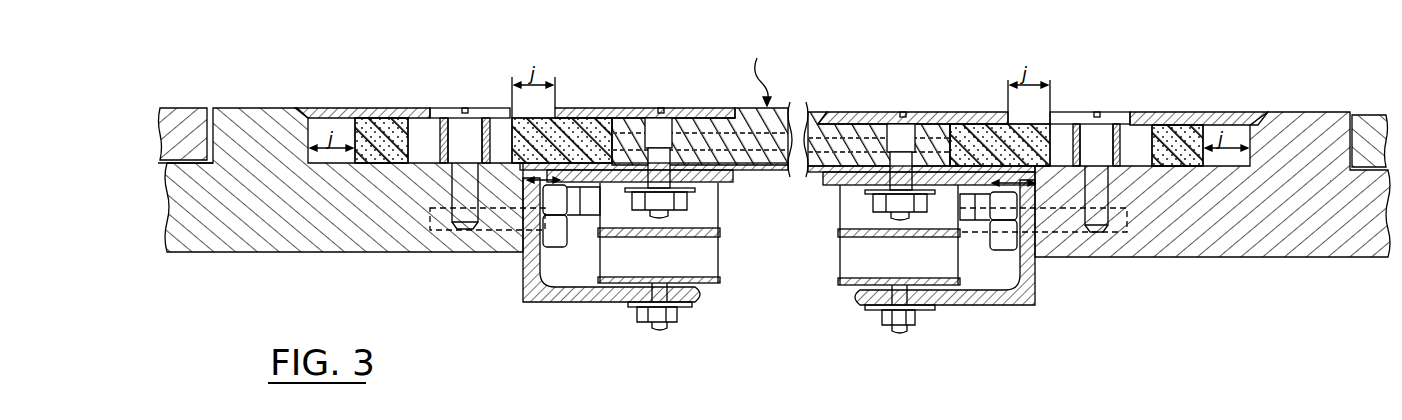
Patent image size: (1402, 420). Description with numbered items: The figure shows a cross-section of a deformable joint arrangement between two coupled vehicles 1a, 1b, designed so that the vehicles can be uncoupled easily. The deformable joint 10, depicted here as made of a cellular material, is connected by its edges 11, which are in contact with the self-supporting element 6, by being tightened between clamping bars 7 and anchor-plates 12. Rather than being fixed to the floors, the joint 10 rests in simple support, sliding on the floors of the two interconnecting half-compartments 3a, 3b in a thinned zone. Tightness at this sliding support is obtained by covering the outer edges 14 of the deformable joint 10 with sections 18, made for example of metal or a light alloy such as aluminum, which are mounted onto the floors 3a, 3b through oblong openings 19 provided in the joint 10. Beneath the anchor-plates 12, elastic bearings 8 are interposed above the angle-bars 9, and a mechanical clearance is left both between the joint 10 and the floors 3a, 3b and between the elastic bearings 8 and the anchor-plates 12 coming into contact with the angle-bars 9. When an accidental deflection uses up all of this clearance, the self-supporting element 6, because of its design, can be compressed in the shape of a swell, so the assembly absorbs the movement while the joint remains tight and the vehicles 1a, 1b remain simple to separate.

The vehicle 1a is at (192, 112).
The vehicle 1b is at (1365, 116).
The floor of interconnecting half-compartment 3a is at (257, 252).
The floor of interconnecting half-compartment 3b is at (1205, 257).
The self-supporting element 6 is at (763, 71).
The clamping bar 7 is at (578, 112).
The elastic bearing 8 is at (698, 258).
The angle-bar 9 is at (524, 290).
The deformable joint 10 is at (513, 130).
The edge of deformable joint 11 is at (606, 128).
The anchor-plate 12 is at (726, 190).
The edge of deformable joint 14 is at (383, 130).
The section 18 is at (345, 110).
The oblong opening 19 is at (430, 112).